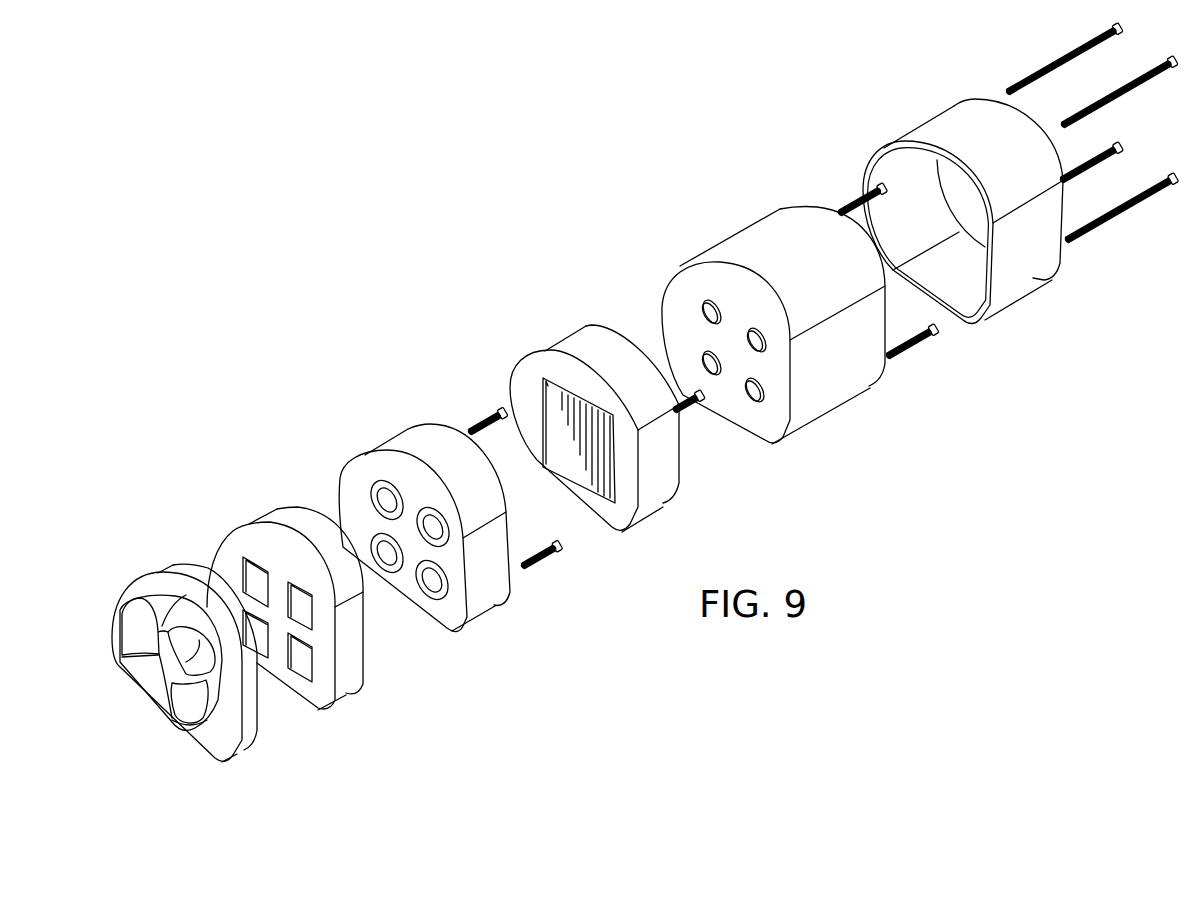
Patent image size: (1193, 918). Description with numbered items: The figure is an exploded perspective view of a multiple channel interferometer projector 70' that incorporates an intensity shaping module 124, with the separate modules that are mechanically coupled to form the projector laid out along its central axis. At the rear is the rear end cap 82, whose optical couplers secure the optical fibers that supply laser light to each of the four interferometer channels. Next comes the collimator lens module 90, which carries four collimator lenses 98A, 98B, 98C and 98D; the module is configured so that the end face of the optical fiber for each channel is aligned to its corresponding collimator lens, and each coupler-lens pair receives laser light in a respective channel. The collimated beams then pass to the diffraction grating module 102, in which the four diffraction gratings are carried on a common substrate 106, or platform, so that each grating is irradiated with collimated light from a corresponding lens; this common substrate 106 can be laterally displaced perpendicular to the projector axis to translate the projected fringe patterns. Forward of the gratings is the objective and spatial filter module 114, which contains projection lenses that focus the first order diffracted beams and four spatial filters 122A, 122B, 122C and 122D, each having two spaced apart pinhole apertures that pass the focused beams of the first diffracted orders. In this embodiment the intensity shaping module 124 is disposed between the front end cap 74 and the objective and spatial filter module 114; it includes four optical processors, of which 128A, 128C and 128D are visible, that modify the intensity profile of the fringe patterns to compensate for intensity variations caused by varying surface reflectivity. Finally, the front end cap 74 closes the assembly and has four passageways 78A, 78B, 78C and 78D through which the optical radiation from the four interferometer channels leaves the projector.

The multiple channel interferometer projector 70' is at (619, 399).
The front end cap 74 is at (110, 570).
The passageway 78A is at (123, 627).
The passageway 78B is at (143, 692).
The passageway 78C is at (213, 677).
The passageway 78D is at (197, 725).
The rear end cap 82 is at (887, 85).
The collimator lens module 90 is at (697, 180).
The collimator lens 98A is at (714, 300).
The collimator lens 98B is at (713, 378).
The collimator lens 98C is at (764, 335).
The collimator lens 98D is at (765, 391).
The diffraction grating module 102 is at (532, 307).
The common substrate 106 is at (608, 455).
The objective and spatial filter module 114 is at (365, 405).
The spatial filter 122A is at (374, 498).
The spatial filter 122B is at (374, 546).
The spatial filter 122C is at (438, 512).
The spatial filter 122D is at (437, 587).
The intensity shaping module 124 is at (210, 490).
The optical processor 128A is at (252, 570).
The optical processor 128C is at (307, 613).
The optical processor 128D is at (307, 663).